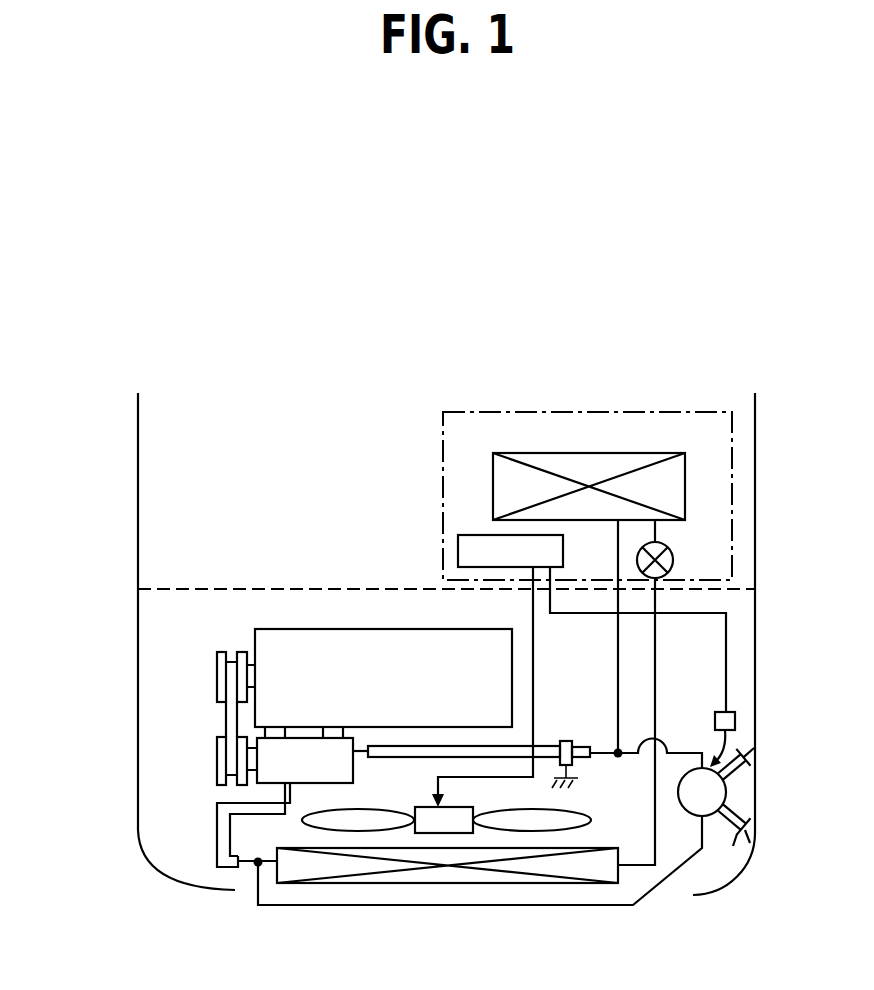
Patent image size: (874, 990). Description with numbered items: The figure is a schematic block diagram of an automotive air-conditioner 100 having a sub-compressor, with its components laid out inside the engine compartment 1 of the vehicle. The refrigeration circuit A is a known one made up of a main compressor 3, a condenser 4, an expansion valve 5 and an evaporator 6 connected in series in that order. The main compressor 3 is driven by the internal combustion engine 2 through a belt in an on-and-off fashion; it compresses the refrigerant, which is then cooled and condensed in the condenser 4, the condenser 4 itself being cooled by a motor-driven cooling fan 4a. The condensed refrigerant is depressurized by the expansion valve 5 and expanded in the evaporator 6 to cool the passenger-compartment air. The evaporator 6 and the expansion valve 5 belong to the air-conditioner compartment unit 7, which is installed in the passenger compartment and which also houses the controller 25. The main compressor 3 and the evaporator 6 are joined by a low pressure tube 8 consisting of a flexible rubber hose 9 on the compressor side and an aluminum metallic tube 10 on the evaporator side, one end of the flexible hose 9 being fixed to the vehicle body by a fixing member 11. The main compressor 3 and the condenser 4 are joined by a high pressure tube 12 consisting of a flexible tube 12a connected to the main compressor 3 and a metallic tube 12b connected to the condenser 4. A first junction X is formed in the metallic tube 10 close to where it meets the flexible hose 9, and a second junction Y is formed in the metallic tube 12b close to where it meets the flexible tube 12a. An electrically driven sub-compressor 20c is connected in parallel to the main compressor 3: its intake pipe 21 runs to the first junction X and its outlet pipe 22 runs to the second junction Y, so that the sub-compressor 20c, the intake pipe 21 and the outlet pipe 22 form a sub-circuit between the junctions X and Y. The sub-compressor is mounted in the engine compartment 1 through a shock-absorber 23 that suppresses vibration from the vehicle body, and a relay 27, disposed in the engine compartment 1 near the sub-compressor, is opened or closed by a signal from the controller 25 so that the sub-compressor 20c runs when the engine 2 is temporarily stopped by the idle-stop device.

The vehicle air conditioning system 100 is at (372, 383).
The engine compartment 1 is at (165, 656).
The internal combustion engine 2 is at (335, 653).
The main compressor 3 is at (272, 750).
The condenser 4 is at (321, 862).
The cooling fan 4a is at (388, 820).
The expansion valve 5 is at (677, 557).
The evaporator 6 is at (670, 493).
The air-conditioner compartment unit 7 is at (742, 429).
The low pressure tube 8 is at (830, 607).
The flexible hose 9 is at (503, 752).
The metallic tube 10 is at (618, 643).
The fixing member 11 is at (562, 766).
The high pressure tube 12 is at (150, 828).
The flexible tube 12a is at (217, 830).
The metallic tube 12b is at (262, 857).
The sub-compressor 20c is at (684, 812).
The intake pipe 21 is at (662, 742).
The outlet pipe 22 is at (493, 908).
The shock-absorber 23 is at (740, 807).
The controller 25 is at (477, 543).
The relay 27 is at (737, 720).
The refrigeration circuit A is at (465, 897).
The first junction X is at (619, 757).
The second junction Y is at (257, 866).